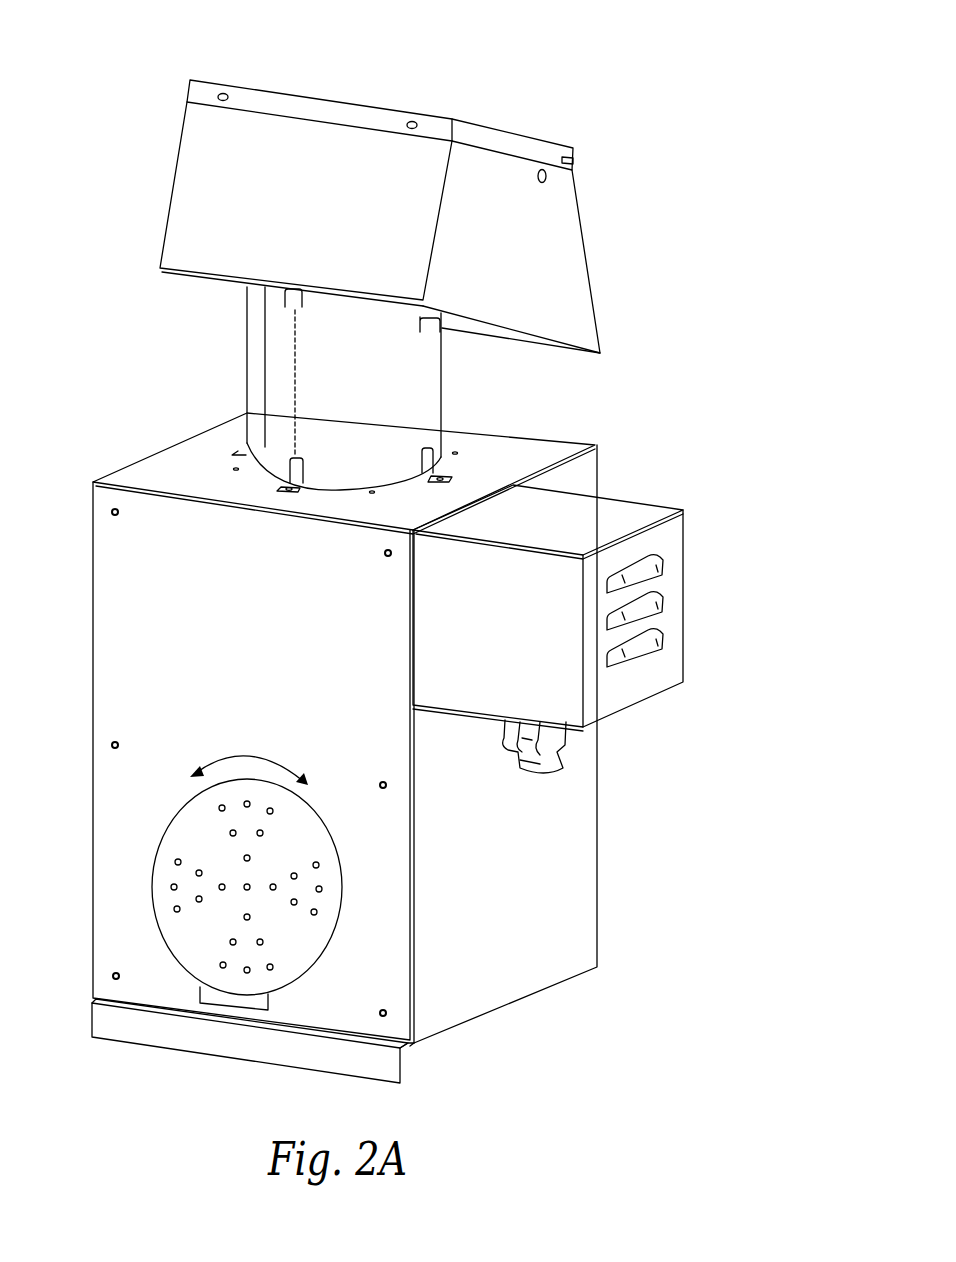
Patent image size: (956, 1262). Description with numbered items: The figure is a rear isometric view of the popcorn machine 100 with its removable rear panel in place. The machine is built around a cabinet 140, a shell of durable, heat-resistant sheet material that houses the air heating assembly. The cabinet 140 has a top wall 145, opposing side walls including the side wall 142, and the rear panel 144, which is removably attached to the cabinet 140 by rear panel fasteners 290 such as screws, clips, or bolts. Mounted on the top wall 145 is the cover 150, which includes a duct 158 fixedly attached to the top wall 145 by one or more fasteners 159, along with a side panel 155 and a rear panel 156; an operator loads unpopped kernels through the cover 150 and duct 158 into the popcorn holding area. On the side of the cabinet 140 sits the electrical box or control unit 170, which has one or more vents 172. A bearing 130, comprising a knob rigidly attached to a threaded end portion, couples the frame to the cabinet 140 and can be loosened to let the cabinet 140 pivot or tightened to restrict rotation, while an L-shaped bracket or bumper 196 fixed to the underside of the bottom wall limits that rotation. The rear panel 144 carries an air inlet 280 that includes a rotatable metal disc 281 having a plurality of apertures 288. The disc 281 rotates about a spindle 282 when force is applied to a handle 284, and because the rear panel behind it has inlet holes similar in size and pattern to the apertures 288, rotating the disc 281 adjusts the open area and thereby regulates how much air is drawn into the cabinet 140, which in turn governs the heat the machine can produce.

The popcorn machine 100 is at (160, 70).
The cover 150 is at (410, 74).
The side panel 155 is at (555, 242).
The rear panel 156 is at (217, 172).
The duct 158 is at (405, 345).
The fasteners 159 is at (448, 455).
The top wall 145 is at (185, 460).
The rear panel 144 is at (130, 673).
The side wall 142 is at (552, 862).
The cabinet 140 is at (597, 930).
The bumper 196 is at (232, 1045).
The rear panel fasteners 290 is at (388, 1013).
The control unit 170 is at (662, 542).
The vents 172 is at (640, 604).
The bearing 130 is at (552, 750).
The air inlet 280 is at (128, 876).
The rotatable metal disc 281 is at (180, 963).
The spindle 282 is at (250, 888).
The apertures 288 is at (178, 860).
The handle 284 is at (215, 997).